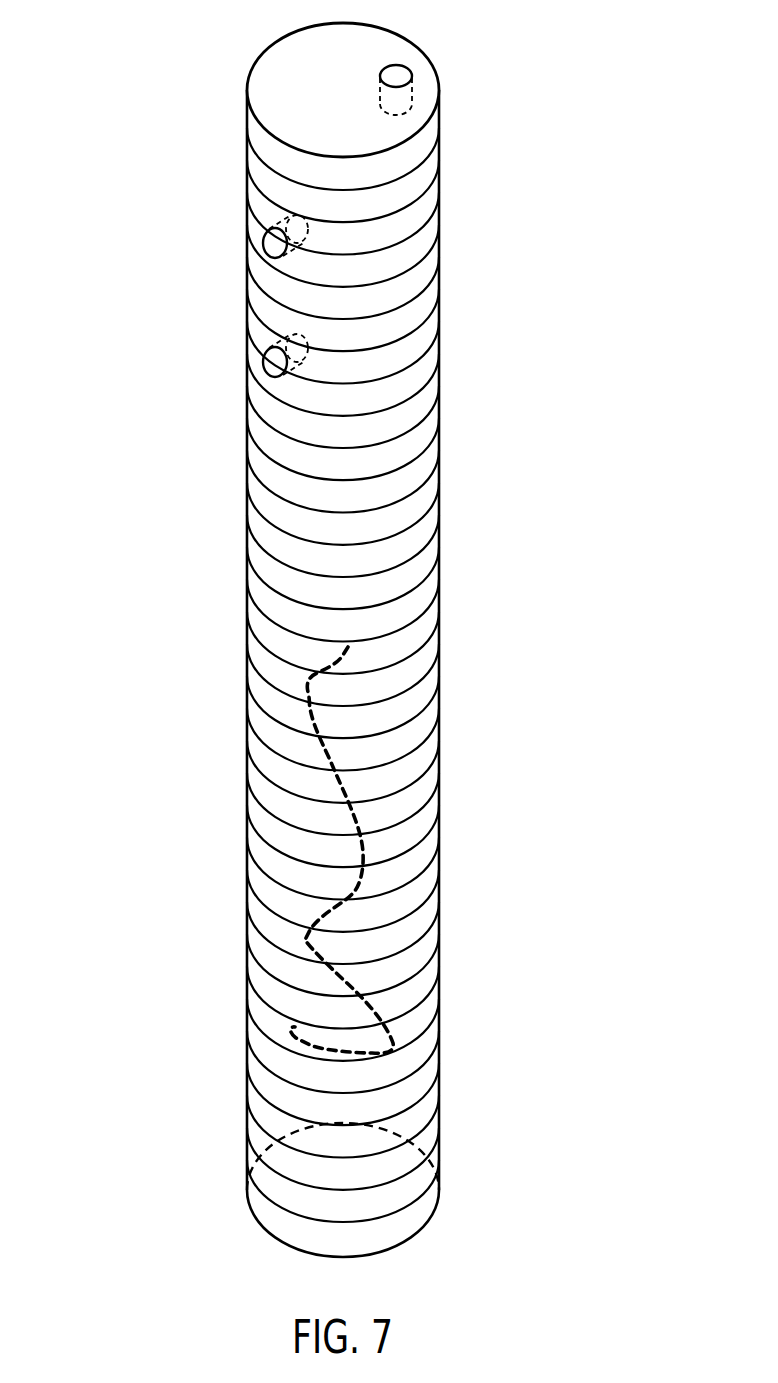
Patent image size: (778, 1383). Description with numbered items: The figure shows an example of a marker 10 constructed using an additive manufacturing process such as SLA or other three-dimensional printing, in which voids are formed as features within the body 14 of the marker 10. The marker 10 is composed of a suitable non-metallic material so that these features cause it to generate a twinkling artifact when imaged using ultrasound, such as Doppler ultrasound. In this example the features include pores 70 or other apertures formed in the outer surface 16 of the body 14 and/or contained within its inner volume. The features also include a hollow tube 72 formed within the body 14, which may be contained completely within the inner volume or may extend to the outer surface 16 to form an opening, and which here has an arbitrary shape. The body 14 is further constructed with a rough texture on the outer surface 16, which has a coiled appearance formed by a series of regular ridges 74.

The marker 10 is at (83, 97).
The body 14 is at (245, 71).
The outer surface 16 is at (440, 337).
The pores 70 is at (397, 49).
The hollow tube 72 is at (296, 946).
The ridges 74 is at (425, 438).